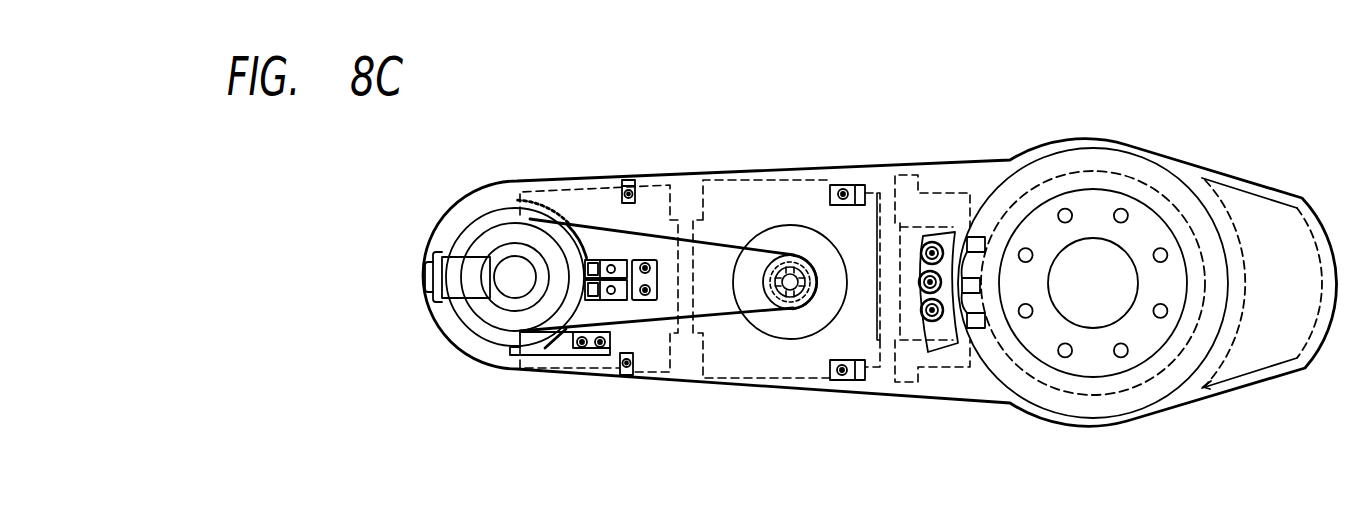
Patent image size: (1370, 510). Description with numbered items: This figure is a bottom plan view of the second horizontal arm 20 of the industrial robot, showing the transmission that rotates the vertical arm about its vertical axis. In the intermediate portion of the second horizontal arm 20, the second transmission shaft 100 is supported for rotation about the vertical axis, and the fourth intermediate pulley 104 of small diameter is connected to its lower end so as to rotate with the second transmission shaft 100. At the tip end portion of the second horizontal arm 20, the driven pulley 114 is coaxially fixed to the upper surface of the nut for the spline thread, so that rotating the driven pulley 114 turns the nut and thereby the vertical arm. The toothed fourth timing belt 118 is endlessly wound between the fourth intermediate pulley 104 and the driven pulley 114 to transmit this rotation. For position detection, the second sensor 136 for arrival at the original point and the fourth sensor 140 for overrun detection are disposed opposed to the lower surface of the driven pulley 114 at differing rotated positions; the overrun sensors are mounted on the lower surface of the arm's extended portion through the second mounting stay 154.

The second horizontal arm 20 is at (953, 154).
The driven pulley 114 is at (507, 228).
The fourth timing belt 118 is at (723, 244).
The fourth intermediate pulley 104 is at (787, 310).
The second transmission shaft 100 is at (790, 278).
The second sensor 136 is at (593, 258).
The second mounting stay 154 is at (638, 258).
The fourth sensor 140 is at (585, 302).